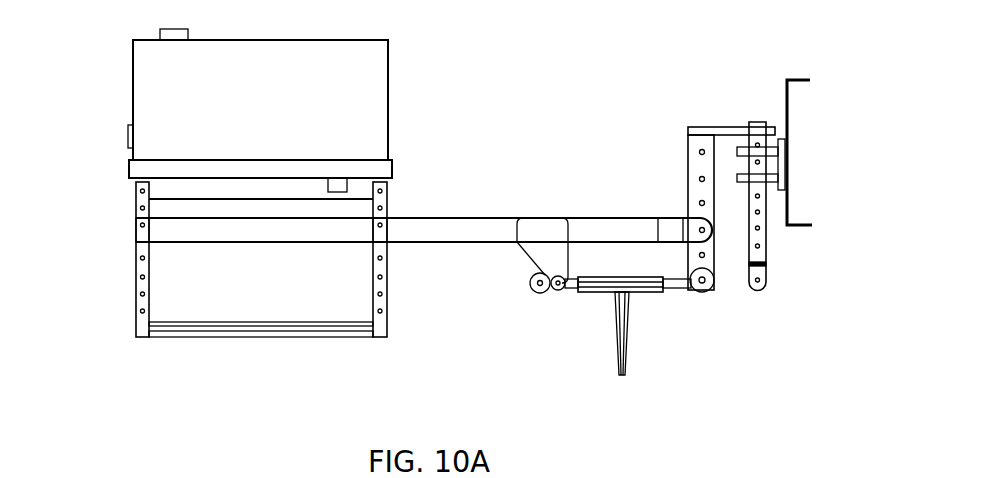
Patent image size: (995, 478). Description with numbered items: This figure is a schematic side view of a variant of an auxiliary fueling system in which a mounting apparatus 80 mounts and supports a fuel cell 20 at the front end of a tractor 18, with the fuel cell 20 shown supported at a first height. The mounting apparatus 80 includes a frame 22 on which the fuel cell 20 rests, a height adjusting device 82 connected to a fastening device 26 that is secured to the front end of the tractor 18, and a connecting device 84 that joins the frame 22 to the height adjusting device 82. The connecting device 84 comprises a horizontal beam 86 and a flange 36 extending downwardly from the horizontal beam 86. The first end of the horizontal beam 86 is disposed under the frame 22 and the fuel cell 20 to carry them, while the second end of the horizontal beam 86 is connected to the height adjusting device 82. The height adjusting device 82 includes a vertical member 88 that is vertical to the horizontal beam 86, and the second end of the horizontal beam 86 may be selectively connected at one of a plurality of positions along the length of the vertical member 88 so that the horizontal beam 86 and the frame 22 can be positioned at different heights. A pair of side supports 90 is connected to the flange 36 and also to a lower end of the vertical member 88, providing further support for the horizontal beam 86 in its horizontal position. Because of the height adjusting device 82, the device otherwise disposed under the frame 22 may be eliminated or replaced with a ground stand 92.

The tractor 18 is at (818, 125).
The fuel cell 20 is at (133, 83).
The frame 22 is at (157, 208).
The fastening device 26 is at (757, 122).
The flange 36 is at (540, 255).
The mounting apparatus 80 is at (520, 102).
The height adjusting device 82 is at (702, 127).
The connecting device 84 is at (463, 275).
The horizontal beam 86 is at (485, 223).
The vertical member 88 is at (707, 288).
The side supports 90 is at (643, 292).
The ground stand 92 is at (136, 297).